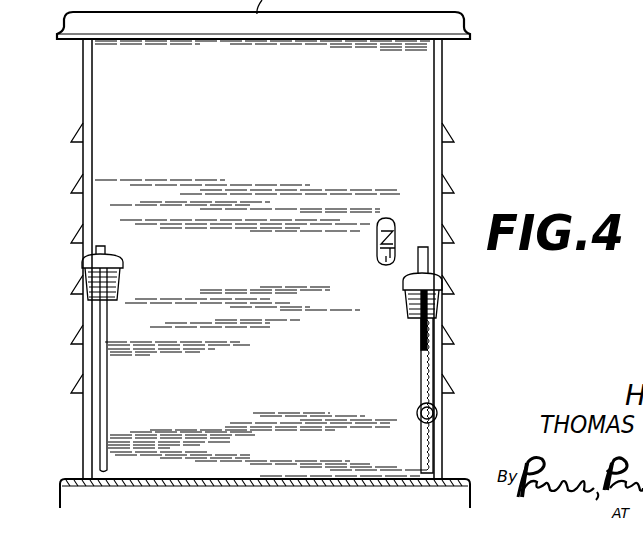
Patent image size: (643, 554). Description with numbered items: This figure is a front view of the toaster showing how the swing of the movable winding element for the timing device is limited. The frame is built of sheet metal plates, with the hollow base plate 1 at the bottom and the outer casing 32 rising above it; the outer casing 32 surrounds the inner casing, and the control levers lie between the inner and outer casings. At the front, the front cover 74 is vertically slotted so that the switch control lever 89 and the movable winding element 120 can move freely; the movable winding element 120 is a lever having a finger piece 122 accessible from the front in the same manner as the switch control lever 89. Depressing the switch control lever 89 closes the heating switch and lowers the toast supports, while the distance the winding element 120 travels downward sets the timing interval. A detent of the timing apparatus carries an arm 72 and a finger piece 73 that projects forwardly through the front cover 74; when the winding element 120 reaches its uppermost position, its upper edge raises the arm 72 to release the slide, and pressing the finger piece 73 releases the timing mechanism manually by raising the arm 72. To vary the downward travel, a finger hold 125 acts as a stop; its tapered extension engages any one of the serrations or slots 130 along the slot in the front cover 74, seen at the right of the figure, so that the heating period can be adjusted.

The base plate 1 is at (267, 487).
The outer casing 32 is at (83, 71).
The front cover 74 is at (395, 88).
The switch control lever 89 is at (108, 316).
The finger piece 73 is at (377, 238).
The arm 72 is at (385, 263).
The finger piece 122 is at (402, 289).
The movable winding element 120 is at (421, 332).
The serrations or slots 130 is at (433, 368).
The finger hold 125 is at (437, 409).